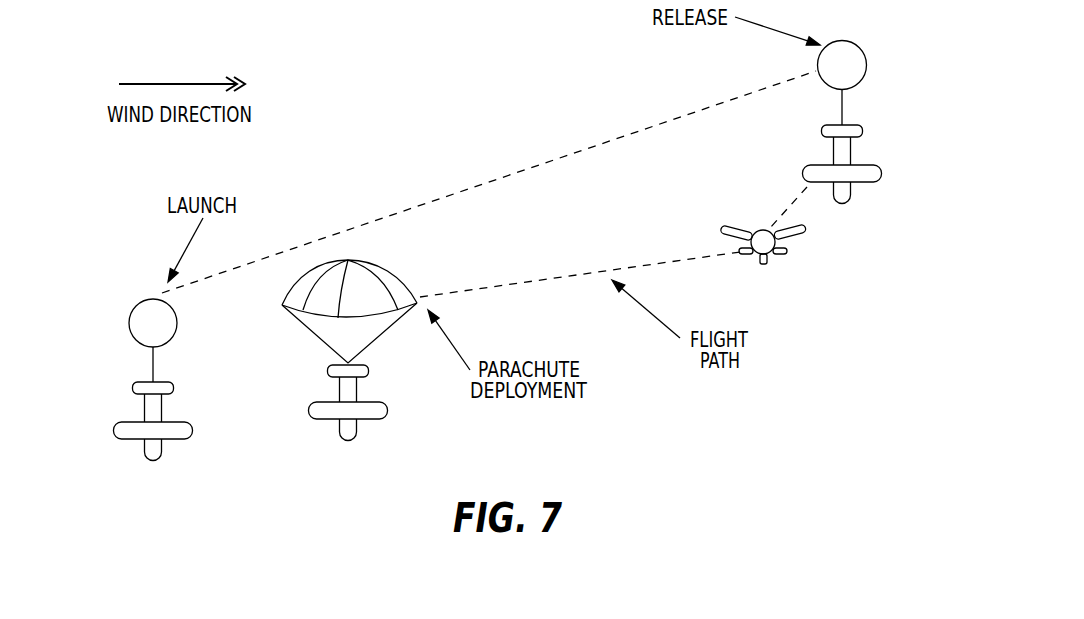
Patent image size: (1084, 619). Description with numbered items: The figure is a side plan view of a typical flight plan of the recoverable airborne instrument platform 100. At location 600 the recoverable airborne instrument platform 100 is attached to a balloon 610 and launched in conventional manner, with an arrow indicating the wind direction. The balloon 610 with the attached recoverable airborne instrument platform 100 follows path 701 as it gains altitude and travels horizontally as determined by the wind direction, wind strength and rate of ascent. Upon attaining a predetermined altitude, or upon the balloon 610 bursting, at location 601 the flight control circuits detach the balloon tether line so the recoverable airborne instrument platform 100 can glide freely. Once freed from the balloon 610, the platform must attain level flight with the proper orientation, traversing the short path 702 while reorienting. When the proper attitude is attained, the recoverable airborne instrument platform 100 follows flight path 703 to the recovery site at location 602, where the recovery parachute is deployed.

The launch location 600 is at (160, 298).
The balloon 610 is at (132, 333).
The recoverable airborne instrument platform 100 is at (147, 410).
The release location 601 is at (867, 62).
The recovery site location 602 is at (395, 277).
The ascent path 701 is at (547, 163).
The reorientation path 702 is at (797, 200).
The flight path 703 is at (553, 278).